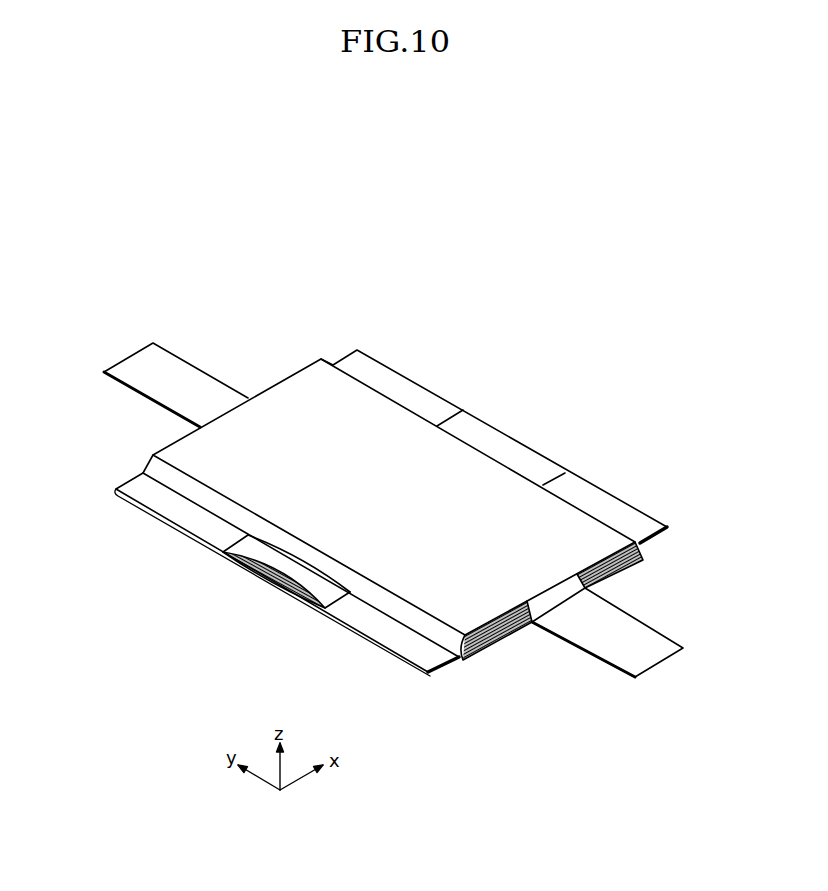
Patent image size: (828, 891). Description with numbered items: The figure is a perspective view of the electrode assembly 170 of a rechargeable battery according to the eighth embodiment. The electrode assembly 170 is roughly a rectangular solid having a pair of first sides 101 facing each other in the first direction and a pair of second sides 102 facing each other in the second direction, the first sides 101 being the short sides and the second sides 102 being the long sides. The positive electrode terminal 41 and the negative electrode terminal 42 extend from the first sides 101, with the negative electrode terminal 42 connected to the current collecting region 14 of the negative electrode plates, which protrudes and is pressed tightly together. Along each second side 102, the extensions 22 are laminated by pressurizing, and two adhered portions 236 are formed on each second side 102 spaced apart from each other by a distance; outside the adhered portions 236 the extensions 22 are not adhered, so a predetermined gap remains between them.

The electrode assembly 170 is at (512, 382).
The first sides 101 is at (287, 375).
The second sides 102 is at (553, 457).
The current collecting region 14 is at (547, 602).
The extensions 22 is at (500, 437).
The adhered portions 236 is at (392, 382).
The positive electrode terminal 41 is at (137, 362).
The negative electrode terminal 42 is at (623, 658).